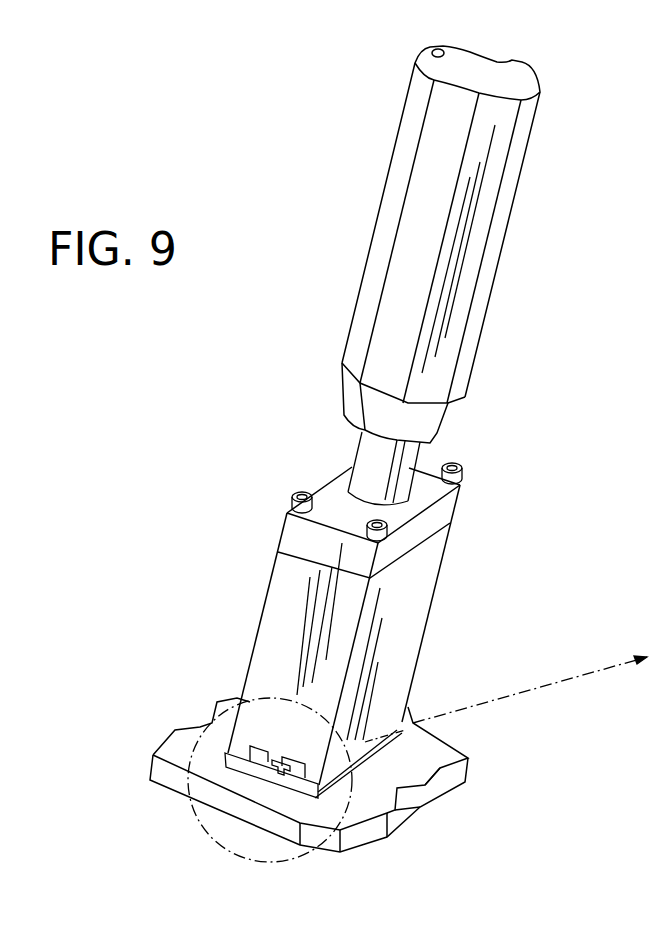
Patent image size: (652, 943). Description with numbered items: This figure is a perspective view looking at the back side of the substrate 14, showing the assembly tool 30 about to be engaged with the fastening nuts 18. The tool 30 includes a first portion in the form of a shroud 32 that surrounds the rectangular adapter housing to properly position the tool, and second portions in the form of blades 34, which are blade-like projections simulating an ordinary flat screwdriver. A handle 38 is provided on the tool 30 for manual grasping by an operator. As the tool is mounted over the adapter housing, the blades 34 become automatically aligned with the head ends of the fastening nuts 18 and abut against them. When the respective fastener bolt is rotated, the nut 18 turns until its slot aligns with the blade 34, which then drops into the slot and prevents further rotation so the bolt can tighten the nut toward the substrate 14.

The substrate 14 is at (403, 797).
The fastening nut 18 is at (272, 782).
The assembly tool 30 is at (450, 443).
The shroud 32 is at (417, 612).
The blade 34 is at (280, 722).
The handle 38 is at (482, 235).